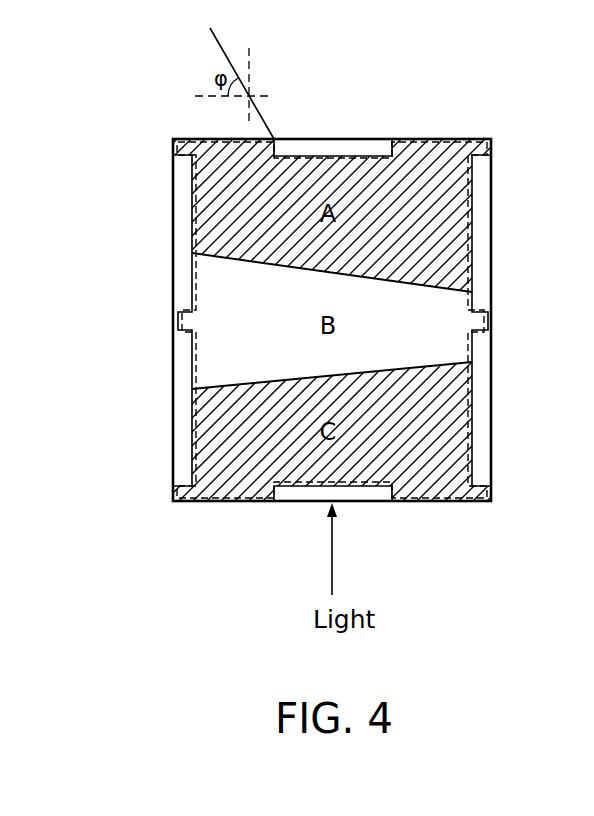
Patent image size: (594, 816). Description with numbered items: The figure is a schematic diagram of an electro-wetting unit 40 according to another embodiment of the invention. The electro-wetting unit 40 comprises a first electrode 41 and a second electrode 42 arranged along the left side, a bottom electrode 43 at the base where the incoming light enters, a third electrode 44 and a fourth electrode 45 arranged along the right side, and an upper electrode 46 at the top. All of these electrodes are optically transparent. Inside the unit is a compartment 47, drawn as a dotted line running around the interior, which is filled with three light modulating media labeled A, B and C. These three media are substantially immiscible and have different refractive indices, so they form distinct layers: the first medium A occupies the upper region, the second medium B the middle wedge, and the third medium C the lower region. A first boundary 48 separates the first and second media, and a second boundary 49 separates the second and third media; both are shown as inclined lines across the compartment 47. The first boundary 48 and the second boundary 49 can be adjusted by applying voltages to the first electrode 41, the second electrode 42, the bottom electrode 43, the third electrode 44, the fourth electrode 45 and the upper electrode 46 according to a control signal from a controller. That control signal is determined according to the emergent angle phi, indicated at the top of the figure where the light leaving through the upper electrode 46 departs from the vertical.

The electro-wetting unit 40 is at (126, 130).
The first electrode 41 is at (182, 223).
The second electrode 42 is at (182, 396).
The bottom electrode 43 is at (370, 503).
The third electrode 44 is at (482, 400).
The fourth electrode 45 is at (482, 225).
The upper electrode 46 is at (342, 140).
The compartment 47 is at (432, 139).
The first boundary 48 is at (208, 258).
The second boundary 49 is at (212, 387).